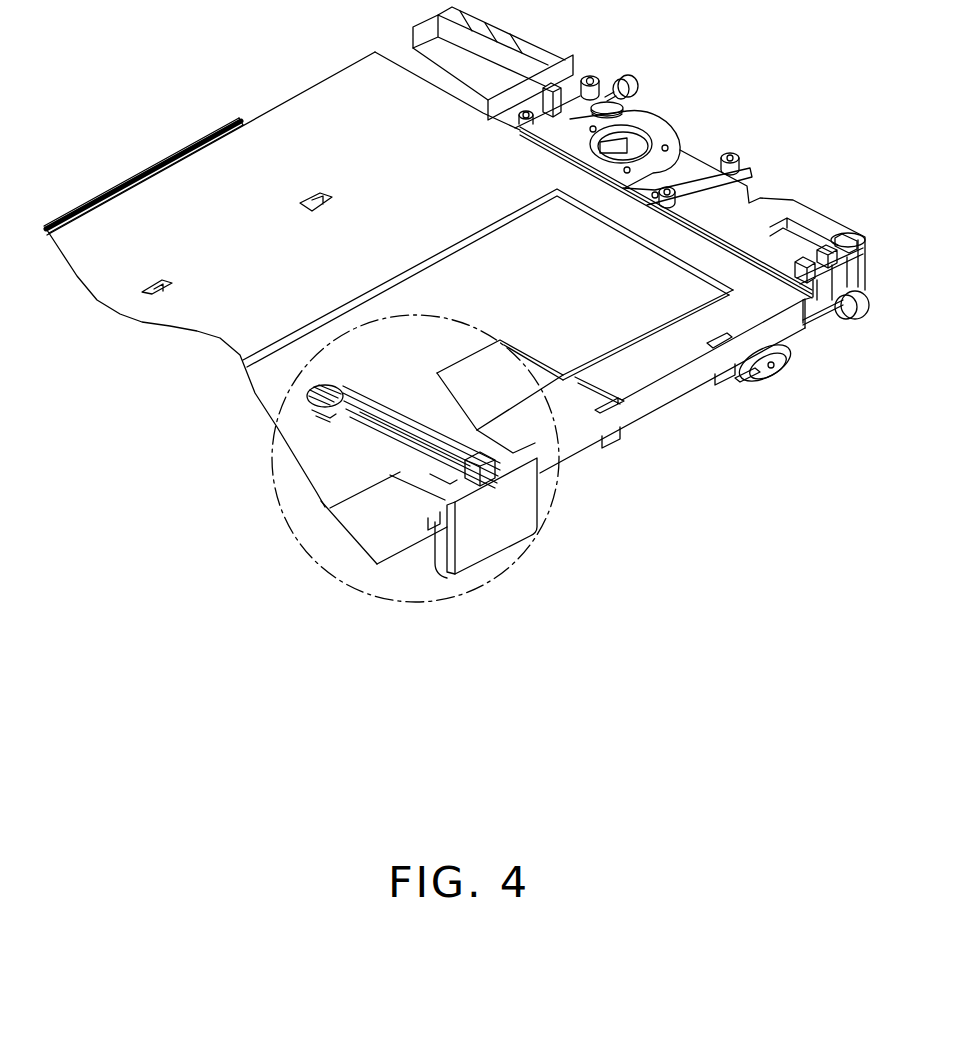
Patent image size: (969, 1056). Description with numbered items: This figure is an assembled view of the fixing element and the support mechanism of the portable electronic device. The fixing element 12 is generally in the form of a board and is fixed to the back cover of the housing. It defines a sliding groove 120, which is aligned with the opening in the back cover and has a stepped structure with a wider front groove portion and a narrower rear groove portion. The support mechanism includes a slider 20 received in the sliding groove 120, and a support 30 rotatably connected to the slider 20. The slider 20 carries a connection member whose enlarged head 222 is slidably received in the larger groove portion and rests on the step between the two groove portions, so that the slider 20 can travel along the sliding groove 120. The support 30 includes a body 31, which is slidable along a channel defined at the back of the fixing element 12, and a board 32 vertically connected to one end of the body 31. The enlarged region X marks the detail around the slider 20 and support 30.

The fixing element 12 is at (362, 112).
The slider 20 is at (321, 404).
The sliding groove 120 is at (360, 425).
The head 222 is at (313, 400).
The support 30 is at (602, 548).
The body 31 is at (447, 580).
The board 32 is at (511, 525).
The detail region X is at (336, 578).